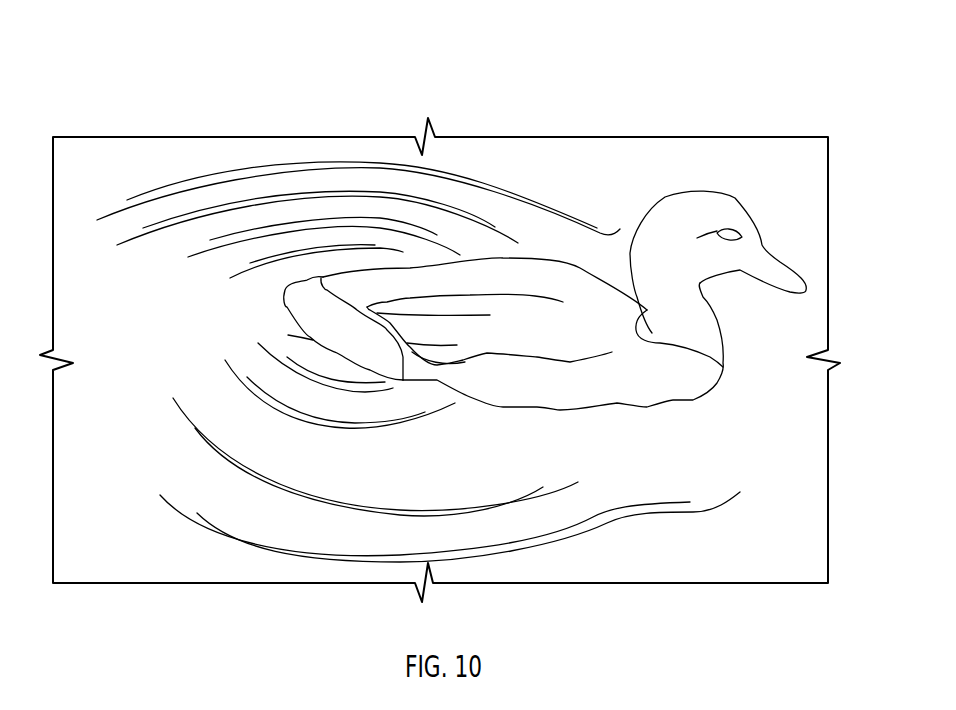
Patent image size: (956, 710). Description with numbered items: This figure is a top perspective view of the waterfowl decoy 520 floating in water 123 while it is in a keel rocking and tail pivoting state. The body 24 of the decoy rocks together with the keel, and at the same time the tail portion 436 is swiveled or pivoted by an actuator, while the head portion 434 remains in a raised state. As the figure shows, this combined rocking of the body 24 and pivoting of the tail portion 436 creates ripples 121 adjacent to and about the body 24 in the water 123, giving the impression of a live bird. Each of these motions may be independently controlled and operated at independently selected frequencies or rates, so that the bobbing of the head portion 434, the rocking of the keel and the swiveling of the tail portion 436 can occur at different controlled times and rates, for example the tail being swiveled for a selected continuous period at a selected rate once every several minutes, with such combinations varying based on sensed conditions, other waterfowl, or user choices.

The decoy 520 is at (603, 121).
The water 123 is at (105, 158).
The ripples 121 is at (355, 172).
The body 24 is at (520, 265).
The tail portion 436 is at (303, 280).
The head portion 434 is at (695, 192).